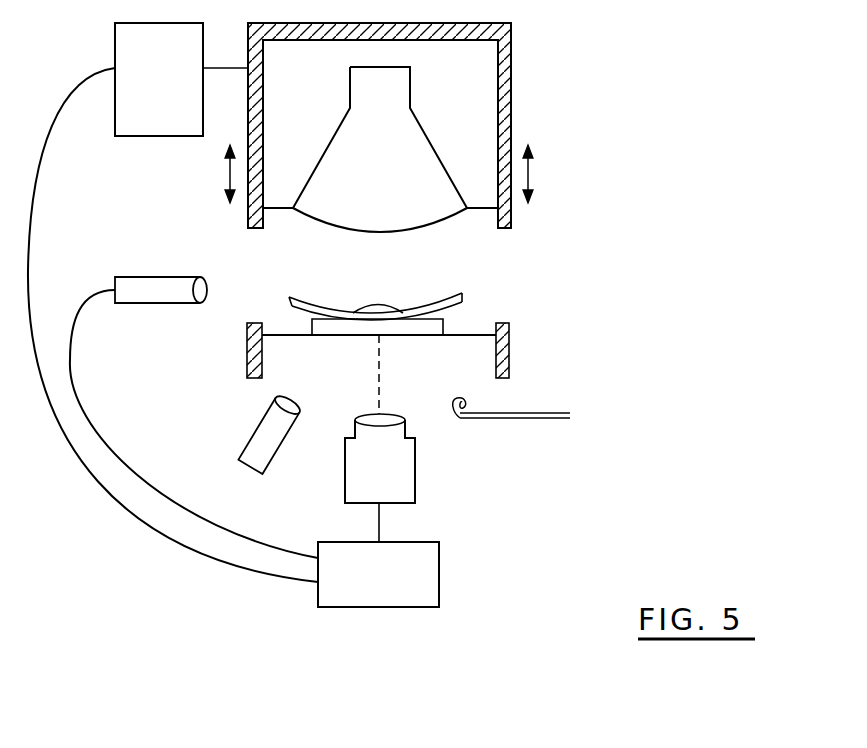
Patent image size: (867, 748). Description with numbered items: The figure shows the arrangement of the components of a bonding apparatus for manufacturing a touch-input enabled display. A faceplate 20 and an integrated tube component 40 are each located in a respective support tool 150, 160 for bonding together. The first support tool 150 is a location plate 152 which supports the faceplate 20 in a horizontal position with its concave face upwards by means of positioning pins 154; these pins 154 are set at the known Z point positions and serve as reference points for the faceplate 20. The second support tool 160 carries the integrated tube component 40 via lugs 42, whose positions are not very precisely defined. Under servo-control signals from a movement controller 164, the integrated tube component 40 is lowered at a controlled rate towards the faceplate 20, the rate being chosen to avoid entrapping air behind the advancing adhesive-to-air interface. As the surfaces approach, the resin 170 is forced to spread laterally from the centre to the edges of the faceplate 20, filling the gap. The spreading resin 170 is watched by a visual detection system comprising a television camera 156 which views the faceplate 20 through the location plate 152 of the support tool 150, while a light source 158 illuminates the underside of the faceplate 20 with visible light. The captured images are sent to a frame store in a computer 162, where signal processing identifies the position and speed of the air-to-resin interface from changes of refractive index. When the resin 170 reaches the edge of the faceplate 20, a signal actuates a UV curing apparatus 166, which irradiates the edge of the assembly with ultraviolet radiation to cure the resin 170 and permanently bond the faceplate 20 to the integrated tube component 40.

The faceplate 20 is at (461, 294).
The integrated tube component (ITC) 40 is at (394, 190).
The lugs 42 is at (480, 209).
The support tool 150 is at (535, 333).
The location plate 152 is at (472, 337).
The positioning pins 154 is at (447, 327).
The television camera 156 is at (402, 484).
The light source 158 is at (455, 413).
The support tool 160 is at (503, 74).
The computer 162 is at (422, 586).
The movement controller 164 is at (178, 85).
The UV curing apparatus 166 is at (244, 446).
The resin 170 is at (377, 306).